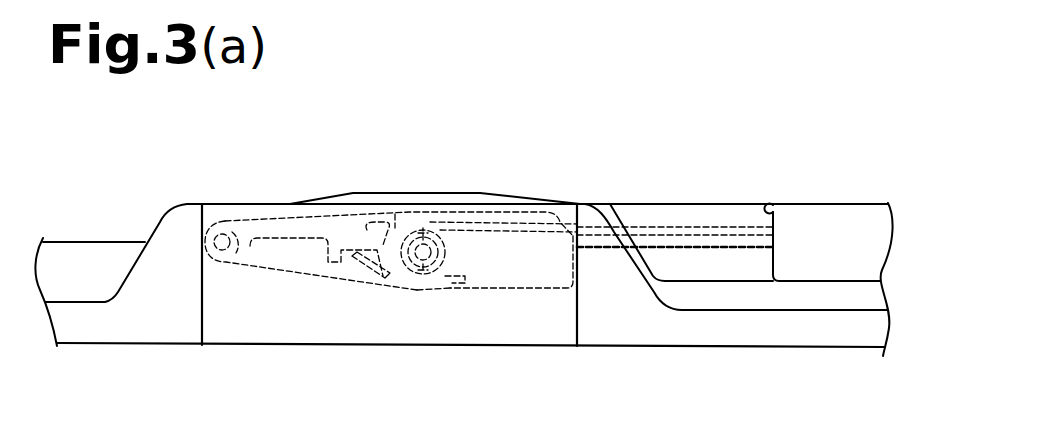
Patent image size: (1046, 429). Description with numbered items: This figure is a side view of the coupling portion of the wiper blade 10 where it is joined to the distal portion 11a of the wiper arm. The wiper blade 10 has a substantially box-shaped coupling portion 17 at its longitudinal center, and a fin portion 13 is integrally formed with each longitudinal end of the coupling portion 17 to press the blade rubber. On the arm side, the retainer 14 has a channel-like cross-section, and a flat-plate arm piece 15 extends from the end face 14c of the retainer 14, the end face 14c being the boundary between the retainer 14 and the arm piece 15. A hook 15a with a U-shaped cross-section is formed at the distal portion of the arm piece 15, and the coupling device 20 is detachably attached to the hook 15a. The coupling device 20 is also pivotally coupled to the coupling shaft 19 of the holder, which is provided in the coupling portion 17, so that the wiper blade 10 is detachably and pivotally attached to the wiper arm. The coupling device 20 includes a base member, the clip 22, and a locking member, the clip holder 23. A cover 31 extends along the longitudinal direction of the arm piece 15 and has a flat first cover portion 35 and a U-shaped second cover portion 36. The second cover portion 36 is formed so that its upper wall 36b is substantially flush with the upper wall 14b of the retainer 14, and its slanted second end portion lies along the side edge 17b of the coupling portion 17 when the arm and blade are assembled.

The wiper blade 10 is at (175, 345).
The distal portion of the wiper arm 11a is at (860, 204).
The fin portion 13 is at (108, 252).
The retainer 14 is at (818, 282).
The upper wall of the retainer 14b is at (815, 203).
The end face of the retainer 14c is at (768, 204).
The arm piece 15 is at (700, 235).
The hook 15a is at (436, 280).
The coupling portion 17 is at (351, 340).
The side edge of the coupling portion 17b is at (648, 252).
The coupling shaft 19 is at (440, 212).
The coupling device 20 is at (315, 292).
The clip 22 is at (534, 290).
The clip holder 23 is at (345, 192).
The cover 31 is at (562, 203).
The first cover portion 35 is at (517, 195).
The second cover portion 36 is at (662, 213).
The upper wall of the second cover portion 36b is at (720, 203).